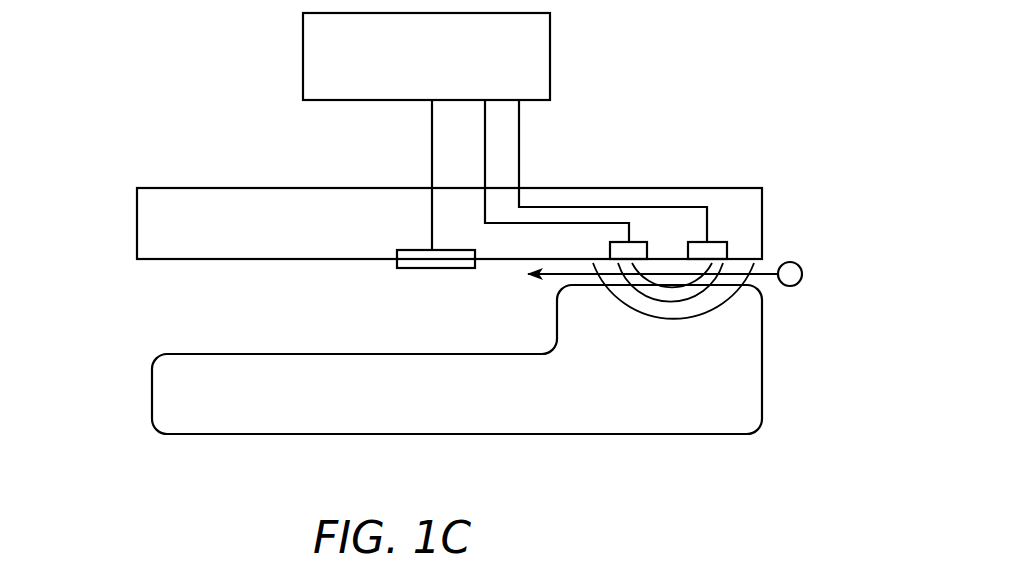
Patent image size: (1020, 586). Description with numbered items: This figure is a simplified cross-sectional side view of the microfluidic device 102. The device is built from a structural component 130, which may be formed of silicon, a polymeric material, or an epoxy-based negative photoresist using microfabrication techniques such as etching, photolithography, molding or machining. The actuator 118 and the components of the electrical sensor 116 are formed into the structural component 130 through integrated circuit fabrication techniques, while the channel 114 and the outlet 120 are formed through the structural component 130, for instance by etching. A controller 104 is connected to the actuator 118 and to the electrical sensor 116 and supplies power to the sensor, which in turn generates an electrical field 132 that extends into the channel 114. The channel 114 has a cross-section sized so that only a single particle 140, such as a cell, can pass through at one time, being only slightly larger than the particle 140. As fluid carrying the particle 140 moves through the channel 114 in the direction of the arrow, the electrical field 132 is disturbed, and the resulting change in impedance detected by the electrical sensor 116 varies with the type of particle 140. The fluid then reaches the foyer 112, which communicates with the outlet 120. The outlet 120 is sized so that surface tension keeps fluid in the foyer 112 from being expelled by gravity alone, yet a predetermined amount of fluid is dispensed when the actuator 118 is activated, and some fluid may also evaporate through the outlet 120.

The microfluidic device 102 is at (211, 101).
The controller 104 is at (448, 80).
The foyer 112 is at (429, 344).
The channel 114 is at (764, 287).
The electrical sensor 116 is at (671, 224).
The actuator 118 is at (413, 250).
The outlet 120 is at (181, 304).
The structural component 130 is at (583, 154).
The electrical field 132 is at (672, 331).
The particle 140 is at (800, 267).